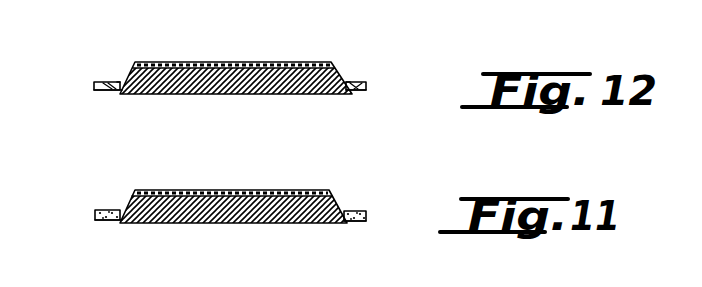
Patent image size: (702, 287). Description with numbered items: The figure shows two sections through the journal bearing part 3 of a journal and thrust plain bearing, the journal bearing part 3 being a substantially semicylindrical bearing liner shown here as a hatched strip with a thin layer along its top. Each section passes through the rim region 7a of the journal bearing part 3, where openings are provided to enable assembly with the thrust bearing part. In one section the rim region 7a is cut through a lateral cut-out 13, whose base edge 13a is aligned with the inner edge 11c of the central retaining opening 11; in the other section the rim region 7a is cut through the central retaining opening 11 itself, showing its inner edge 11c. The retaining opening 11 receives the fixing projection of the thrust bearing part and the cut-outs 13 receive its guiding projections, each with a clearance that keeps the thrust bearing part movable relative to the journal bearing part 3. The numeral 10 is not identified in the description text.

In FIG. 12, the journal bearing part 3 is at (152, 58).
In FIG. 11, the journal bearing part 3 is at (169, 184).
In FIG. 12, the strip body 10 is at (258, 61).
In FIG. 11, the strip body 10 is at (251, 187).
In FIG. 12, the lateral cut-outs 13 is at (94, 85).
In FIG. 12, the base edge 13a is at (117, 82).
In FIG. 12, the rim region 7a is at (107, 93).
In FIG. 11, the rim region 7a is at (100, 222).
In FIG. 11, the central retaining opening 11 is at (117, 210).
In FIG. 11, the inner edge 11c is at (119, 214).